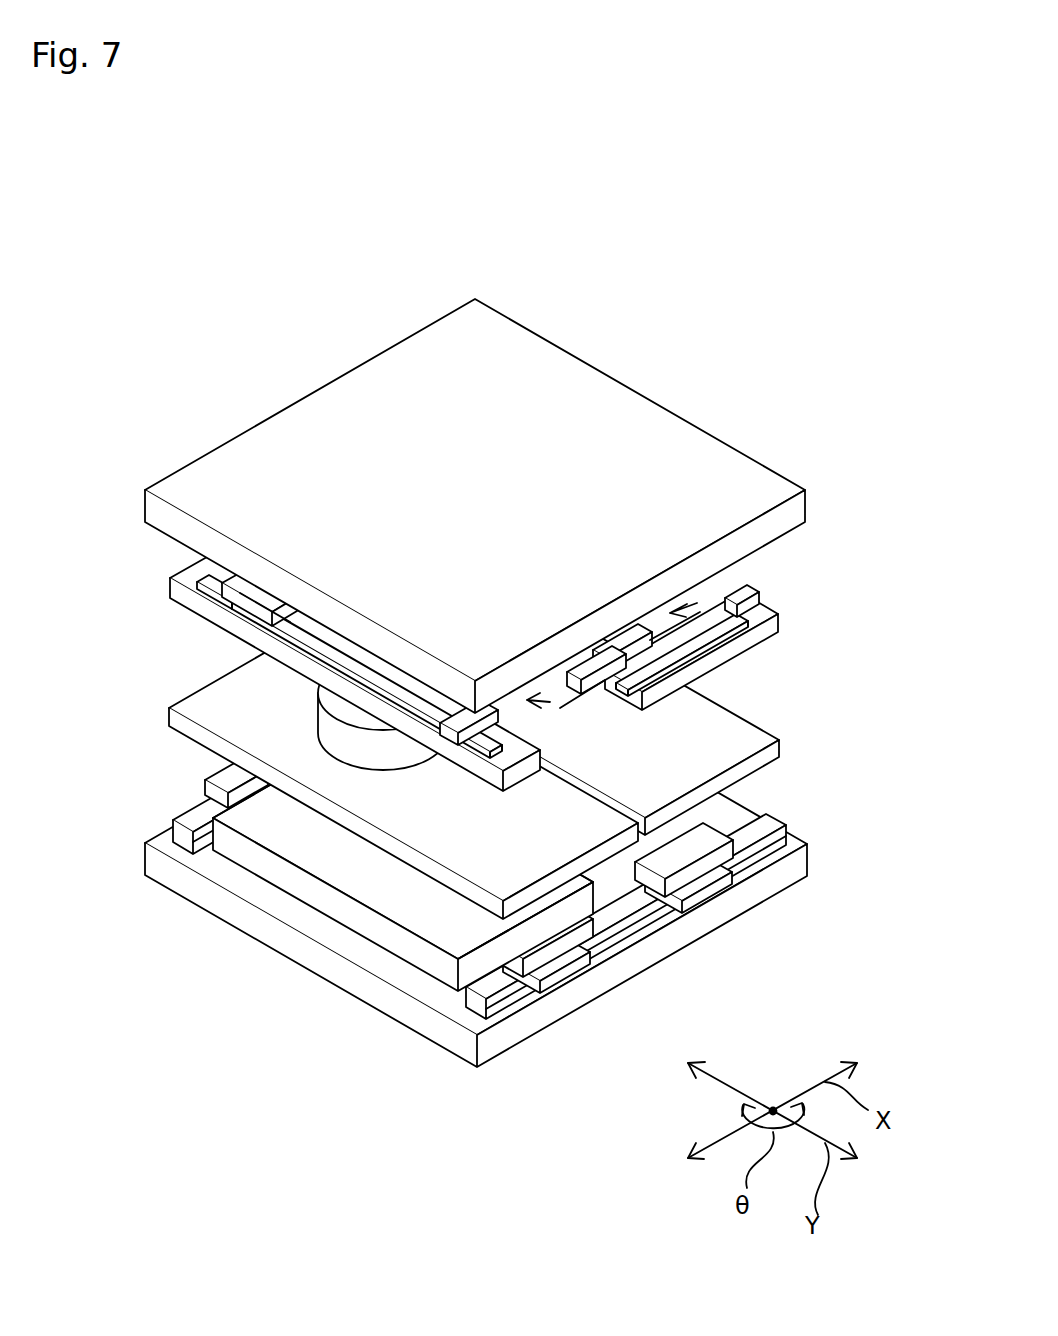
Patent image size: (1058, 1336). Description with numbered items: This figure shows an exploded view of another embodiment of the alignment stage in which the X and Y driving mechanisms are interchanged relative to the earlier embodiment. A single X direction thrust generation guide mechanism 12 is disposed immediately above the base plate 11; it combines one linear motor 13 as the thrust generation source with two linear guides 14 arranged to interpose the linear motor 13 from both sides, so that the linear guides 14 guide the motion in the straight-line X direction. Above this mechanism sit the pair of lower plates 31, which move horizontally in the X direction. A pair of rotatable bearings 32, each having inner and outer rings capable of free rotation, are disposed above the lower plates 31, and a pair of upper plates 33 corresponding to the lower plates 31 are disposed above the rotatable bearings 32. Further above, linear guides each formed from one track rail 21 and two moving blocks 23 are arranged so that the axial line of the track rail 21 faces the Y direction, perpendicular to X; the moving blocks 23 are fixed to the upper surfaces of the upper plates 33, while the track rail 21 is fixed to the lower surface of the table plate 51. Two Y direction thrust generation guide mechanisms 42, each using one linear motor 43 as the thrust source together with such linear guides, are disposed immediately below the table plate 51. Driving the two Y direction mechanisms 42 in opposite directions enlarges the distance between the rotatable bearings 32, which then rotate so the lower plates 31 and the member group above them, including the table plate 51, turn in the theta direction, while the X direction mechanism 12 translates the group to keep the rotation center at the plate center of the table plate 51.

The base plate 11 is at (200, 908).
The X direction thrust generation guide mechanism 12 is at (388, 953).
The linear motor 13 is at (363, 885).
The linear guide 14 is at (212, 790).
The track rail 21 is at (223, 590).
The moving block 23 is at (245, 608).
The lower plate 31 is at (200, 710).
The rotatable bearing 32 is at (426, 762).
The upper plate 33 is at (182, 580).
The Y direction thrust generation guide mechanism 42 is at (695, 612).
The linear motor 43 is at (648, 632).
The table plate 51 is at (327, 432).